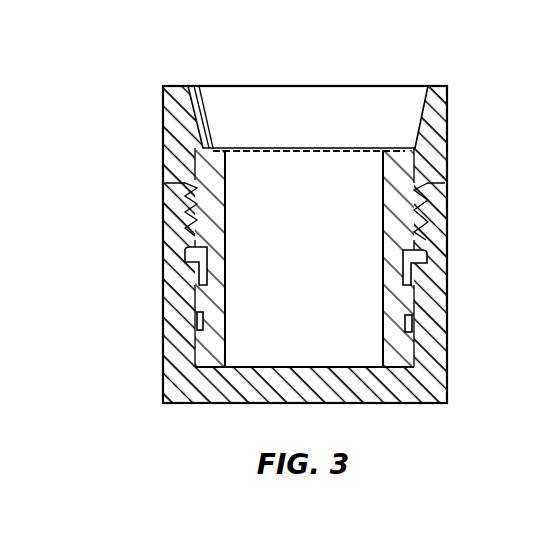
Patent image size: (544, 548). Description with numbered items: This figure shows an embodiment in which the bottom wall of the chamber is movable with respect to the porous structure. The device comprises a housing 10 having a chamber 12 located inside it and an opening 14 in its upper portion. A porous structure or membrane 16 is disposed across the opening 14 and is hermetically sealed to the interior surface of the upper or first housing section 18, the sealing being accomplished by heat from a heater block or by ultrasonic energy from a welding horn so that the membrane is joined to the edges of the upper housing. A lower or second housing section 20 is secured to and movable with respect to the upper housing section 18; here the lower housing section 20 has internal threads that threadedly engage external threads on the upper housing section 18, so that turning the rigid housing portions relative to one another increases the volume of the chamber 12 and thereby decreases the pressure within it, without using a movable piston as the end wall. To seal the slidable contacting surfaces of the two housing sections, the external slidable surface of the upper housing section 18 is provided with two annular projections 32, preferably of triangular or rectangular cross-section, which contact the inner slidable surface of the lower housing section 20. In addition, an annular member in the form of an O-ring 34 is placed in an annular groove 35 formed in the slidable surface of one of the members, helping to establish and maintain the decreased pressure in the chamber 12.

The housing 10 is at (128, 209).
The chamber 12 is at (362, 162).
The opening 14 is at (219, 127).
The porous structure or membrane 16 is at (333, 153).
The upper housing section 18 is at (178, 133).
The lower housing section 20 is at (180, 387).
The annular projections 32 is at (195, 305).
The O-ring 34 is at (410, 327).
The annular groove 35 is at (412, 302).